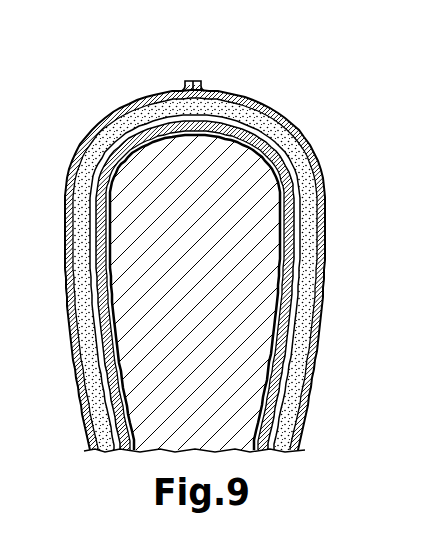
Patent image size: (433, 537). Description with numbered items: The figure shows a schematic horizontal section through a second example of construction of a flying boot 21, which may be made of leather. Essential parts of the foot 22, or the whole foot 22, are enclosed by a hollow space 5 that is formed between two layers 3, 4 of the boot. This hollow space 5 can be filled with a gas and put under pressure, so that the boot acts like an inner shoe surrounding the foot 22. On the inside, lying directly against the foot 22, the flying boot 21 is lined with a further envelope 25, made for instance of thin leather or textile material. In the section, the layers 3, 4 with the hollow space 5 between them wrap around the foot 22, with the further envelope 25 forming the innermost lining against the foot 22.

The flying boot 21 is at (88, 142).
The layer 4 is at (85, 188).
The further envelope 25 is at (123, 142).
The hollow space 5 is at (83, 222).
The layer 3 is at (98, 312).
The foot 22 is at (178, 163).